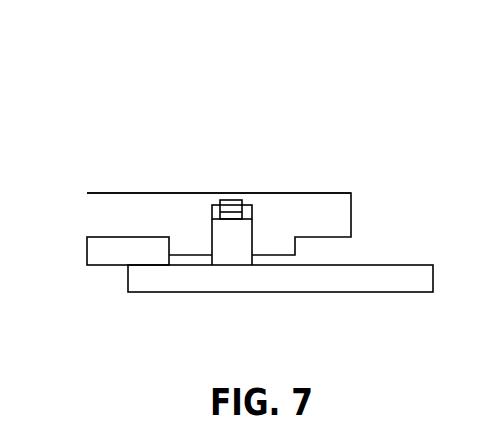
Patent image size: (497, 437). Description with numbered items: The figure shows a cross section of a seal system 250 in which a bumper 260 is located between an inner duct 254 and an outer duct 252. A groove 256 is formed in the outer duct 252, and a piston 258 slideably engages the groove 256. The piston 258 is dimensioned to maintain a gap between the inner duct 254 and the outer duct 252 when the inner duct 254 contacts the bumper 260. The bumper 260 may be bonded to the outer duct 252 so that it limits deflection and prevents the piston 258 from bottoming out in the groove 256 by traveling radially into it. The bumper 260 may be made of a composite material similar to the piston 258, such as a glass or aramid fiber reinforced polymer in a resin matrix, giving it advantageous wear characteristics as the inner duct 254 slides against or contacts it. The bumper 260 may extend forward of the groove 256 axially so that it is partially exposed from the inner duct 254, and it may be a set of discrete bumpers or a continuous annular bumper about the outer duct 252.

The seal system 250 is at (146, 102).
The outer duct 252 is at (303, 207).
The inner duct 254 is at (175, 273).
The groove 256 is at (210, 212).
The piston 258 is at (243, 230).
The bumper 260 is at (98, 255).